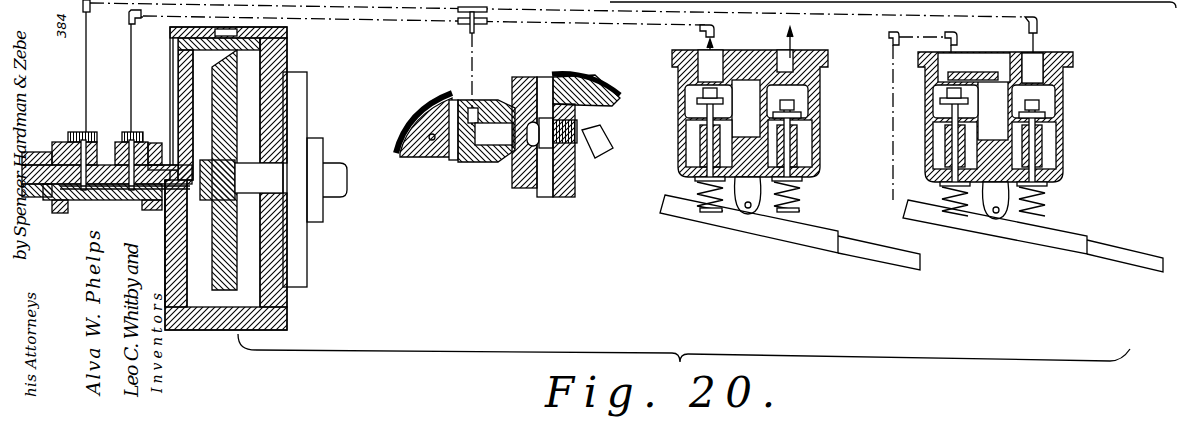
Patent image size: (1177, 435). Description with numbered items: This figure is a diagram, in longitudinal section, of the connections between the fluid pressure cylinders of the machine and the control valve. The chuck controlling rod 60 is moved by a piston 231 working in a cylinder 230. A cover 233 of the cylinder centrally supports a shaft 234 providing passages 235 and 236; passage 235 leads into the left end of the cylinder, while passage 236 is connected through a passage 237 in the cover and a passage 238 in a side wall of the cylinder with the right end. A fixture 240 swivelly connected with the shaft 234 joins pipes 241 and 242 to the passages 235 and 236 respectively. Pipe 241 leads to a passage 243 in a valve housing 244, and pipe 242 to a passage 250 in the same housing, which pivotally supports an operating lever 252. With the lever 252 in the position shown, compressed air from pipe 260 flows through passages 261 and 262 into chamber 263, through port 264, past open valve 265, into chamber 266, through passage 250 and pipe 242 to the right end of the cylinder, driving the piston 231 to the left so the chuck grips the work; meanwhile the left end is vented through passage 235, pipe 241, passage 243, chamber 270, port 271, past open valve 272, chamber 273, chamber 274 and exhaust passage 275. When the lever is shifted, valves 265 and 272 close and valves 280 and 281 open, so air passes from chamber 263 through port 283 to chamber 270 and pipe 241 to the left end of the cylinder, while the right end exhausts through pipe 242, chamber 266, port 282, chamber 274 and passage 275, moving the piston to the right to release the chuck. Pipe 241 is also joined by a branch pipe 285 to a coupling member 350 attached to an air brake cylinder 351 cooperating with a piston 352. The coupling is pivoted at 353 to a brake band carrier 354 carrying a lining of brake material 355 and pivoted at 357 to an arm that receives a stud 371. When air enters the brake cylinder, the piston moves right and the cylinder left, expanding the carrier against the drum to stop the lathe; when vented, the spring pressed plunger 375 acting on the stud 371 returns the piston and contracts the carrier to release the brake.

The chuck controlling rod 60 is at (347, 182).
The cylinder 230 is at (270, 313).
The piston 231 is at (230, 80).
The cover 233 is at (175, 223).
The shaft 234 is at (103, 170).
The passage 235 is at (82, 190).
The passage 236 is at (158, 150).
The passage 237 is at (177, 72).
The passage 238 is at (225, 33).
The fixture 240 is at (62, 150).
The pipe 241 is at (86, 66).
The pipe 242 is at (131, 80).
The passage 243 is at (1044, 70).
The valve housing 244 is at (816, 101).
The passage 250 is at (680, 56).
The operating lever 252 is at (870, 265).
The pipe 260 is at (892, 52).
The passage 261 is at (990, 70).
The passage 262 is at (742, 150).
The chamber 263 is at (690, 138).
The port 264 is at (700, 115).
The valve 265 is at (698, 97).
The chamber 266 is at (696, 82).
The chamber 270 is at (1032, 92).
The port 271 is at (942, 120).
The valve 272 is at (944, 115).
The chamber 273 is at (945, 92).
The chamber 274 is at (806, 94).
The exhaust passage 275 is at (795, 52).
The valve 280 is at (800, 126).
The valve 281 is at (1044, 126).
The port 282 is at (800, 145).
The port 283 is at (1056, 150).
The branch pipe 285 is at (468, 62).
The coupling member 350 is at (465, 162).
The air brake cylinder 351 is at (512, 100).
The piston 352 is at (533, 185).
The pivot 353 is at (432, 140).
The brake band carrier 354 is at (418, 130).
The brake band 355 is at (450, 100).
The pivot 357 is at (568, 95).
The stud 371 is at (578, 128).
The plunger 375 is at (595, 158).